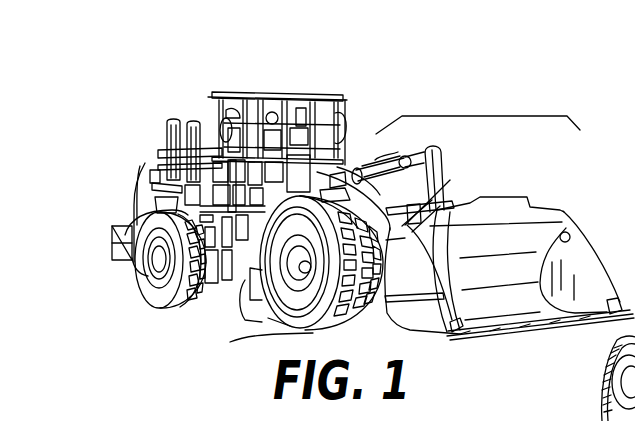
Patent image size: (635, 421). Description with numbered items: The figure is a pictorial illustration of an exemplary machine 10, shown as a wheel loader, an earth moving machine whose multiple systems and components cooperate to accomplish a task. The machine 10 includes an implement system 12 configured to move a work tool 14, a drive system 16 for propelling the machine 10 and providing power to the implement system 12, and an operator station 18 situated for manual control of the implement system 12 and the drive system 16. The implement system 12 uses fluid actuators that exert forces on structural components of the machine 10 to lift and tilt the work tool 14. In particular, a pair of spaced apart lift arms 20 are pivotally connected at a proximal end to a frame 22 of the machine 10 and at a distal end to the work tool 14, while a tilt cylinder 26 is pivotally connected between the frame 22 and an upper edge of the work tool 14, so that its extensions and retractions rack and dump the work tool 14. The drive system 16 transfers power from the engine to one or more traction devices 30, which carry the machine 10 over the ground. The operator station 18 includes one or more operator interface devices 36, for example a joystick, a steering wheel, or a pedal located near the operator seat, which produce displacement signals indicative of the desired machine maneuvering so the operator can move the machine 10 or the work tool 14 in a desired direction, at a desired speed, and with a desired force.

The machine 10 is at (426, 91).
The implement system 12 is at (517, 113).
The work tool 14 is at (505, 266).
The drive system 16 is at (150, 163).
The operator station 18 is at (288, 157).
The lift arms 20 is at (447, 187).
The frame 22 is at (248, 271).
The tilt cylinder 26 is at (410, 150).
The traction devices 30 is at (180, 320).
The operator interface devices 36 is at (258, 130).